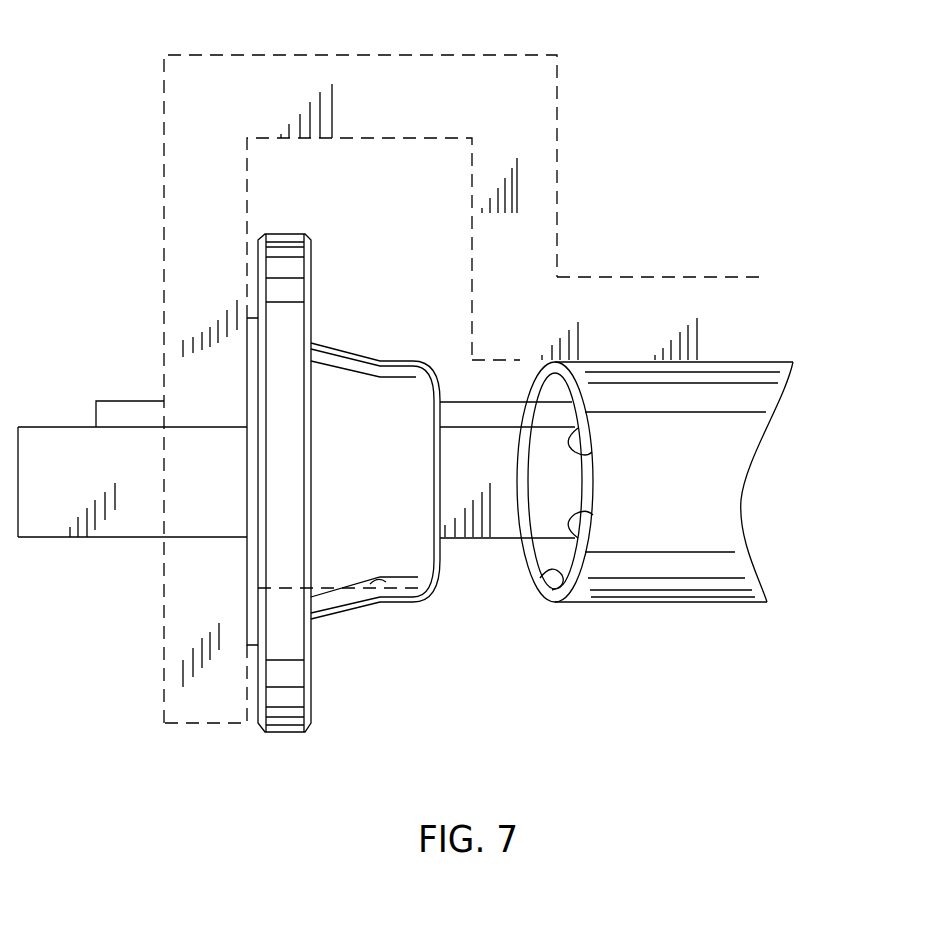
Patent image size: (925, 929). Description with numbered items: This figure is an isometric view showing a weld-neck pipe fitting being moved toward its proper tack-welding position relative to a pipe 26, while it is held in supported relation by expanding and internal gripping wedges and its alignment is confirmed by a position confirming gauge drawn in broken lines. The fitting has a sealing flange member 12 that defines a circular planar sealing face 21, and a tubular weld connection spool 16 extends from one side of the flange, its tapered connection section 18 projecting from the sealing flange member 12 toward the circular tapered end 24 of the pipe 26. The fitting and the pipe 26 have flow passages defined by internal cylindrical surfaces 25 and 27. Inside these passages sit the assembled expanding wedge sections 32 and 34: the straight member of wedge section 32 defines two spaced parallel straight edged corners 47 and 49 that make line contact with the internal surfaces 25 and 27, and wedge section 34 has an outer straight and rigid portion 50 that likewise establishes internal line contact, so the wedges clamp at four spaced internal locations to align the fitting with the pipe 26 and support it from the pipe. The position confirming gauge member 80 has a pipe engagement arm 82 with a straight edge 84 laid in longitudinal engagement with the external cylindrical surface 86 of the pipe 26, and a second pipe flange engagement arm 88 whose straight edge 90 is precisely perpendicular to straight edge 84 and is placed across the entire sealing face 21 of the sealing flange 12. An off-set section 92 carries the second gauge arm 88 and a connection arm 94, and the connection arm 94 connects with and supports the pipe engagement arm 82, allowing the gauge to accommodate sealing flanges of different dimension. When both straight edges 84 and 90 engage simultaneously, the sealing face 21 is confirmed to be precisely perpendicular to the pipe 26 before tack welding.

The sealing flange member 12 is at (283, 233).
The tubular weld connection spool 16 is at (412, 355).
The tapered connection section 18 is at (345, 352).
The circular planar sealing face 21 is at (247, 377).
The circular tapered end 24 is at (548, 366).
The internal cylindrical surface 25 is at (392, 590).
The pipe 26 is at (655, 588).
The internal cylindrical surface 27 is at (545, 577).
The expanding wedge section 32 is at (95, 416).
The expanding wedge section 34 is at (60, 535).
The straight edged corner 47 is at (592, 452).
The straight edged corner 49 is at (593, 515).
The outer straight and rigid portion 50 is at (498, 510).
The position confirming gauge member 80 is at (146, 70).
The pipe engagement arm 82 is at (620, 292).
The straight edge 84 is at (503, 360).
The external cylindrical surface 86 is at (755, 378).
The pipe flange engagement arm 88 is at (188, 240).
The straight edge 90 is at (247, 178).
The off-set section 92 is at (430, 72).
The connection arm 94 is at (493, 237).